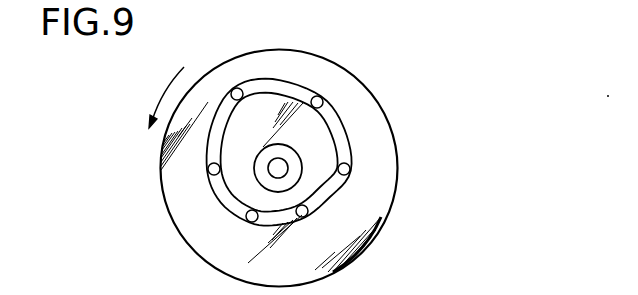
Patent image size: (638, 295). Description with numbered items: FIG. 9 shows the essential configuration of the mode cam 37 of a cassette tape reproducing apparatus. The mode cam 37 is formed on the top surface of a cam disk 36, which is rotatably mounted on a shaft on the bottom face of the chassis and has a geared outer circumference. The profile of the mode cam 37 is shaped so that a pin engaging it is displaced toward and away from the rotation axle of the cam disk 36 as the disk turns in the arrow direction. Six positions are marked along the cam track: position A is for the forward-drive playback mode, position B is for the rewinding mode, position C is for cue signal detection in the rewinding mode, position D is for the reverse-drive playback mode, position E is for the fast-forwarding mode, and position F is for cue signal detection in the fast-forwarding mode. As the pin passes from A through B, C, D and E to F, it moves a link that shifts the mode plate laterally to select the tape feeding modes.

The cam disk 36 is at (408, 83).
The mode cam 37 is at (351, 137).
The position A' A is at (359, 171).
The position B' B is at (313, 221).
The position C' C is at (247, 229).
The position D' D is at (200, 173).
The position E' E is at (230, 84).
The position F' F is at (324, 92).